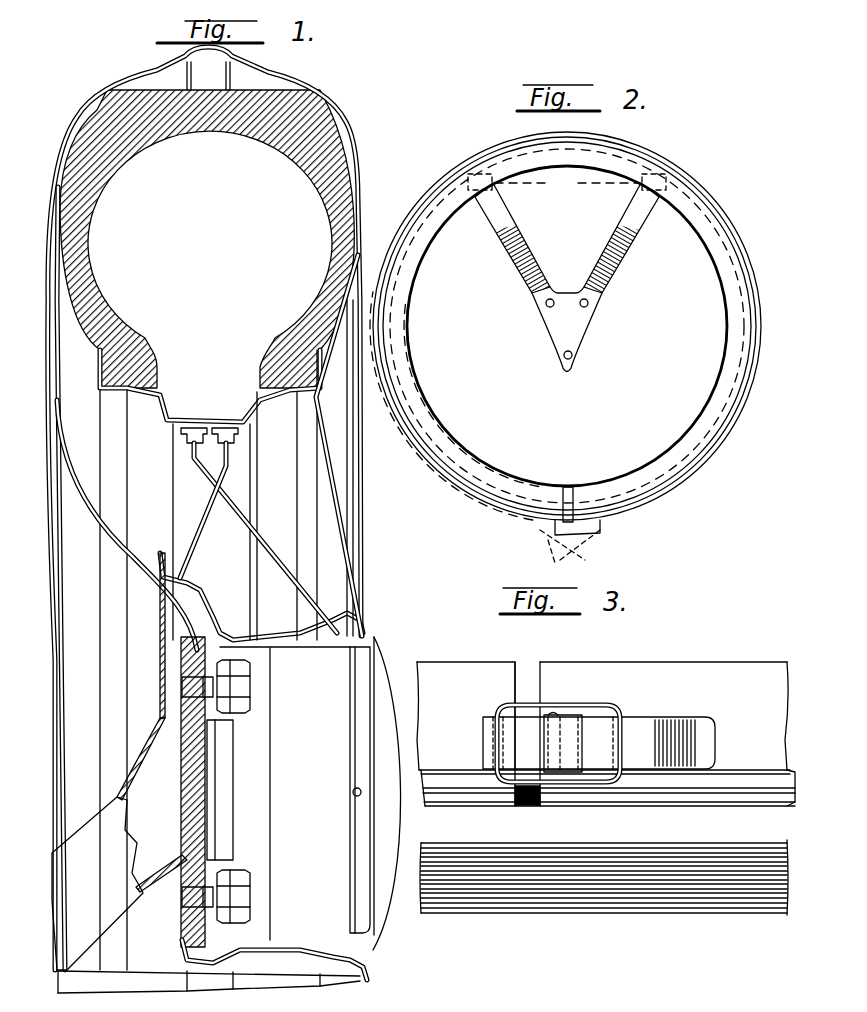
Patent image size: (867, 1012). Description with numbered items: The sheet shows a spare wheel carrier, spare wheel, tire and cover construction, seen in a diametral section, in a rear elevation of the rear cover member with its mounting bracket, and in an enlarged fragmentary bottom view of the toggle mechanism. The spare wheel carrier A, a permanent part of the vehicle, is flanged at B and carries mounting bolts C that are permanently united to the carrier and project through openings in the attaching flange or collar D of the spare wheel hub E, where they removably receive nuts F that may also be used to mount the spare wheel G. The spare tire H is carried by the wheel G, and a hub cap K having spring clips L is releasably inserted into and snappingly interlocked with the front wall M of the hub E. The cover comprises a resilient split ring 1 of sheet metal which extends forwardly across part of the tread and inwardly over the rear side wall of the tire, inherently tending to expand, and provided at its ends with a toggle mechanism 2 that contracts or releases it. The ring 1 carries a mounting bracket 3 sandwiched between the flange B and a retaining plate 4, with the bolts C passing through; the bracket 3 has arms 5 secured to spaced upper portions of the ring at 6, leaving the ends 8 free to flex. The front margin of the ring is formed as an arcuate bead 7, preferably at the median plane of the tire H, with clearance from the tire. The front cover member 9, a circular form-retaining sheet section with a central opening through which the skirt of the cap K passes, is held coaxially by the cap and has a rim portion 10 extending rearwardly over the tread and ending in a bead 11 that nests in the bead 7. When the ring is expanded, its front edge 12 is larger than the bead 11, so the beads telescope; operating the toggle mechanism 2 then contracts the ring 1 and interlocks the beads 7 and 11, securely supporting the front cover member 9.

In FIG. 1, the resilient split ring 1 is at (75, 120).
In FIG. 2, the resilient split ring 1 is at (436, 422).
In FIG. 3, the resilient split ring 1 is at (726, 660).
In FIG. 2, the toggle mechanism 2 is at (600, 545).
In FIG. 3, the toggle mechanism 2 is at (622, 708).
In FIG. 1, the mounting bracket 3 is at (44, 374).
In FIG. 2, the mounting bracket 3 is at (566, 287).
In FIG. 1, the retaining plate 4 is at (200, 640).
In FIG. 1, the arms 5 is at (44, 322).
In FIG. 2, the arms 5 is at (612, 230).
In FIG. 1, the securing points 6 is at (57, 160).
In FIG. 2, the securing points 6 is at (567, 184).
In FIG. 1, the bead 7 is at (205, 55).
In FIG. 2, the bead 7 is at (487, 505).
In FIG. 3, the bead 7 is at (742, 780).
In FIG. 2, the ends 8 is at (592, 494).
In FIG. 1, the front cover member 9 is at (345, 118).
In FIG. 3, the front cover member 9 is at (550, 916).
In FIG. 1, the rim portion 10 is at (268, 77).
In FIG. 3, the rim portion 10 is at (426, 807).
In FIG. 1, the bead 11 is at (207, 80).
In FIG. 3, the bead 11 is at (525, 802).
In FIG. 1, the front edge 12 is at (228, 67).
In FIG. 3, the front edge 12 is at (648, 806).
In FIG. 1, the spare wheel carrier A is at (55, 855).
In FIG. 1, the flange B is at (181, 650).
In FIG. 1, the mounting bolts C is at (185, 690).
In FIG. 1, the attaching flange or collar D is at (268, 860).
In FIG. 1, the spare wheel hub E is at (205, 586).
In FIG. 1, the nuts F is at (236, 713).
In FIG. 1, the spare wheel G is at (221, 428).
In FIG. 1, the spare tire H is at (333, 152).
In FIG. 1, the hub cap K is at (384, 660).
In FIG. 1, the spring clips L is at (350, 650).
In FIG. 1, the front wall M is at (355, 950).